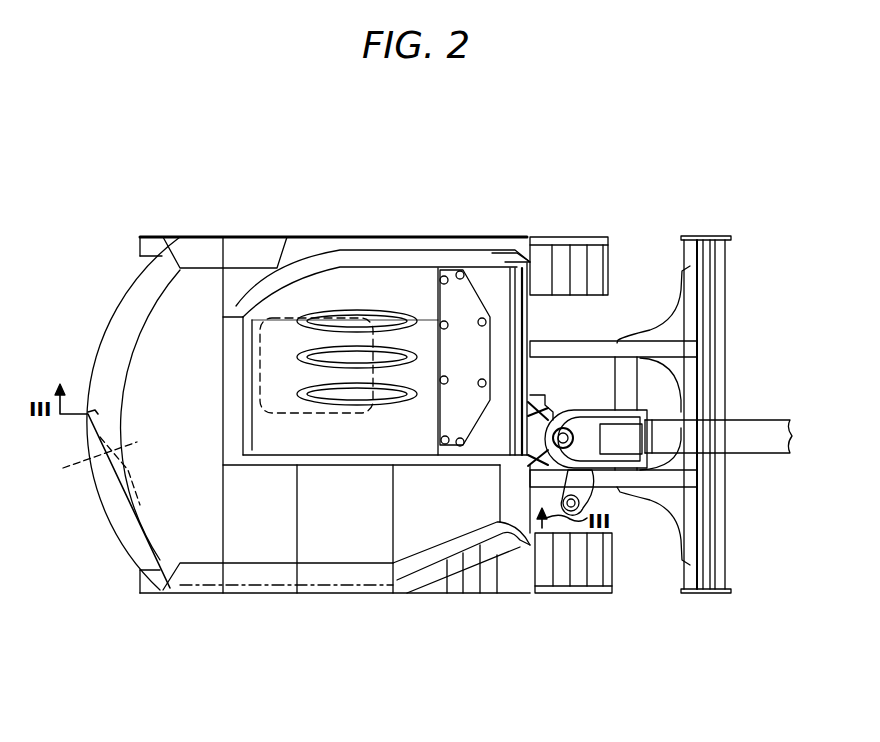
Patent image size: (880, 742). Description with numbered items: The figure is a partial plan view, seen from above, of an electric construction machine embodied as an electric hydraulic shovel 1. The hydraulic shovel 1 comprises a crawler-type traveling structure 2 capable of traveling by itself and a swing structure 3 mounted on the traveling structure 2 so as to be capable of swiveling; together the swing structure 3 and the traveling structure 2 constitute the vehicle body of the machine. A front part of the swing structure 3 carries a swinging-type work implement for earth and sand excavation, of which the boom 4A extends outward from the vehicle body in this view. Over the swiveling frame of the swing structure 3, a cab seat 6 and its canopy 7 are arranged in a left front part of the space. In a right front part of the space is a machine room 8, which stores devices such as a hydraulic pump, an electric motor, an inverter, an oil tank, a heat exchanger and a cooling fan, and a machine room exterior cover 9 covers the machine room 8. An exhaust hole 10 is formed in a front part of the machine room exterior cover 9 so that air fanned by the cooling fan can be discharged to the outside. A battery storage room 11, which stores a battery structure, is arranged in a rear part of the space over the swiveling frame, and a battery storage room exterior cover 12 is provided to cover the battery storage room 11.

The electric hydraulic shovel 1 is at (645, 223).
The traveling structure 2 is at (545, 233).
The swing structure 3 is at (251, 600).
The boom 4A is at (762, 428).
The cab seat 6 is at (352, 337).
The canopy 7 is at (315, 288).
The machine room 8 is at (373, 570).
The machine room exterior cover 9 is at (322, 570).
The exhaust hole 10 is at (457, 580).
The battery storage room 11 is at (90, 471).
The battery storage room exterior cover 12 is at (170, 458).